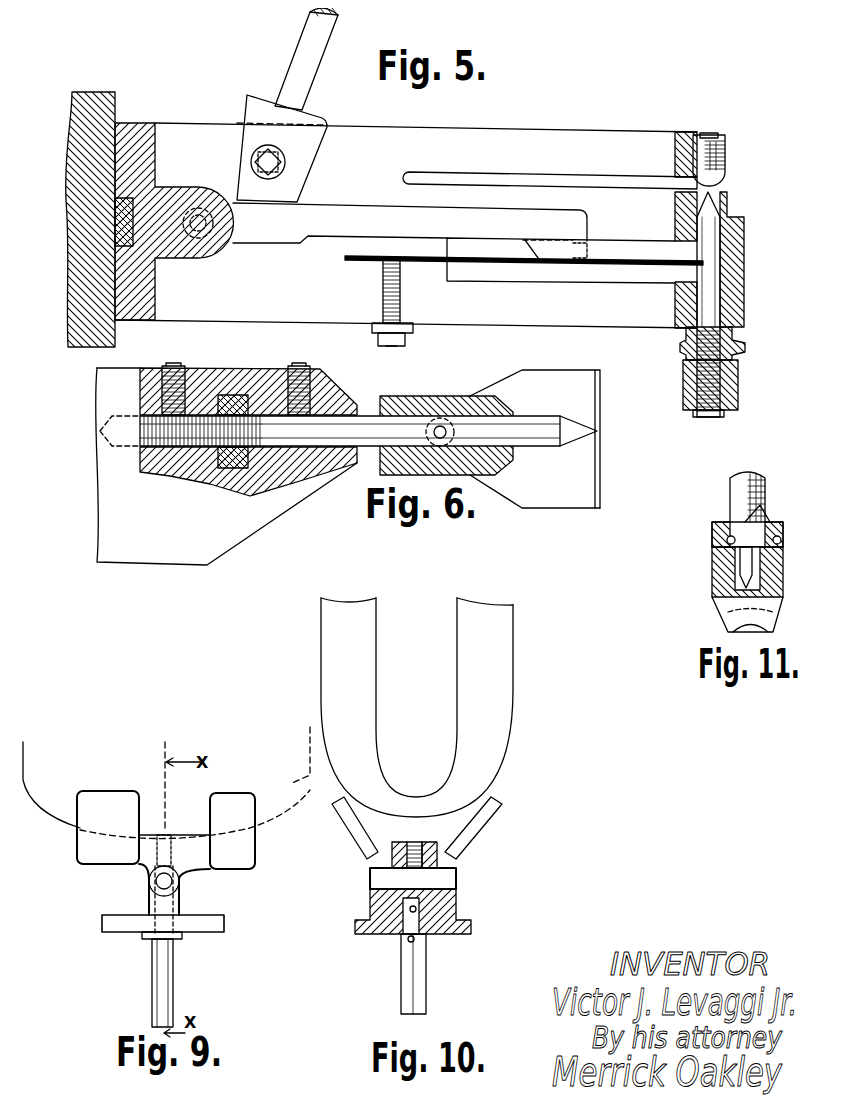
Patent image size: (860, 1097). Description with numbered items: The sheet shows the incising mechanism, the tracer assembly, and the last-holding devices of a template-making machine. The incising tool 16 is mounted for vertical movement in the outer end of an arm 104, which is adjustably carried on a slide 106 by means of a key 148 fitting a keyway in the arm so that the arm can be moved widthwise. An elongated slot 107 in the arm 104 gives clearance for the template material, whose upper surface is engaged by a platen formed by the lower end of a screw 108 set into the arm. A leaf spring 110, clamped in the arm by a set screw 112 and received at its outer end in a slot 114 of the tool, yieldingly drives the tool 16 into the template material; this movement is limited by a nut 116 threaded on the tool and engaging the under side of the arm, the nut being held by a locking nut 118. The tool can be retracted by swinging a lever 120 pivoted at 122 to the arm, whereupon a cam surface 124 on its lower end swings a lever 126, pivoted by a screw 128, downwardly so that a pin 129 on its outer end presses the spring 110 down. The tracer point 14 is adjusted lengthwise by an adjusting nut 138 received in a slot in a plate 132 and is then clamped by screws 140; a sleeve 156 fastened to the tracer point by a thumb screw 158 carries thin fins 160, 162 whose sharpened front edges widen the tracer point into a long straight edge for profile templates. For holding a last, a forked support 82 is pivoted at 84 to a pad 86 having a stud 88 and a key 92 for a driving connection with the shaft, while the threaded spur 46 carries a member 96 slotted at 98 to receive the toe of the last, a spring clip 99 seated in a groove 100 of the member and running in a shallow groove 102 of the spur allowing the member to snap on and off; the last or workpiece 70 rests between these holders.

In FIG. 6, the tracer point 14 is at (598, 436).
In FIG. 5, the incising tool 16 is at (716, 199).
In FIG. 11, the threaded spur 46 is at (738, 500).
In FIG. 10, the workpiece 70 is at (325, 667).
In FIG. 9, the forked support 82 is at (110, 805).
In FIG. 10, the forked support 82 is at (348, 815).
In FIG. 9, the pivot 84 is at (170, 883).
In FIG. 10, the pivot 84 is at (452, 880).
In FIG. 9, the pad 86 is at (118, 919).
In FIG. 10, the pad 86 is at (468, 927).
In FIG. 9, the stud 88 is at (168, 980).
In FIG. 10, the stud 88 is at (404, 991).
In FIG. 9, the key 92 is at (183, 937).
In FIG. 10, the key 92 is at (408, 941).
In FIG. 11, the member 96 is at (712, 568).
In FIG. 11, the slot 98 is at (735, 625).
In FIG. 11, the spring clip 99 is at (782, 540).
In FIG. 11, the groove 100 is at (722, 540).
In FIG. 11, the shallow groove 102 is at (768, 510).
In FIG. 5, the arm 104 is at (140, 140).
In FIG. 5, the slide 106 is at (92, 104).
In FIG. 5, the elongated slot 107 is at (545, 180).
In FIG. 5, the screw 108 is at (715, 133).
In FIG. 5, the leaf spring 110 is at (620, 268).
In FIG. 5, the set screw 112 is at (385, 336).
In FIG. 5, the slot 114 is at (700, 266).
In FIG. 5, the nut 116 is at (746, 354).
In FIG. 5, the locking nut 118 is at (738, 392).
In FIG. 5, the lever 120 is at (325, 34).
In FIG. 5, the pivot 122 is at (275, 162).
In FIG. 5, the cam surface 124 is at (240, 198).
In FIG. 5, the lever 126 is at (285, 236).
In FIG. 5, the screw 128 is at (195, 262).
In FIG. 5, the pin 129 is at (585, 253).
In FIG. 6, the plate 132 is at (226, 553).
In FIG. 6, the adjusting nut 138 is at (237, 393).
In FIG. 6, the screws 140 is at (168, 392).
In FIG. 5, the key 148 is at (120, 219).
In FIG. 6, the sleeve 156 is at (398, 398).
In FIG. 6, the thumb screw 158 is at (455, 398).
In FIG. 6, the fin 160 is at (572, 383).
In FIG. 6, the fin 162 is at (542, 500).